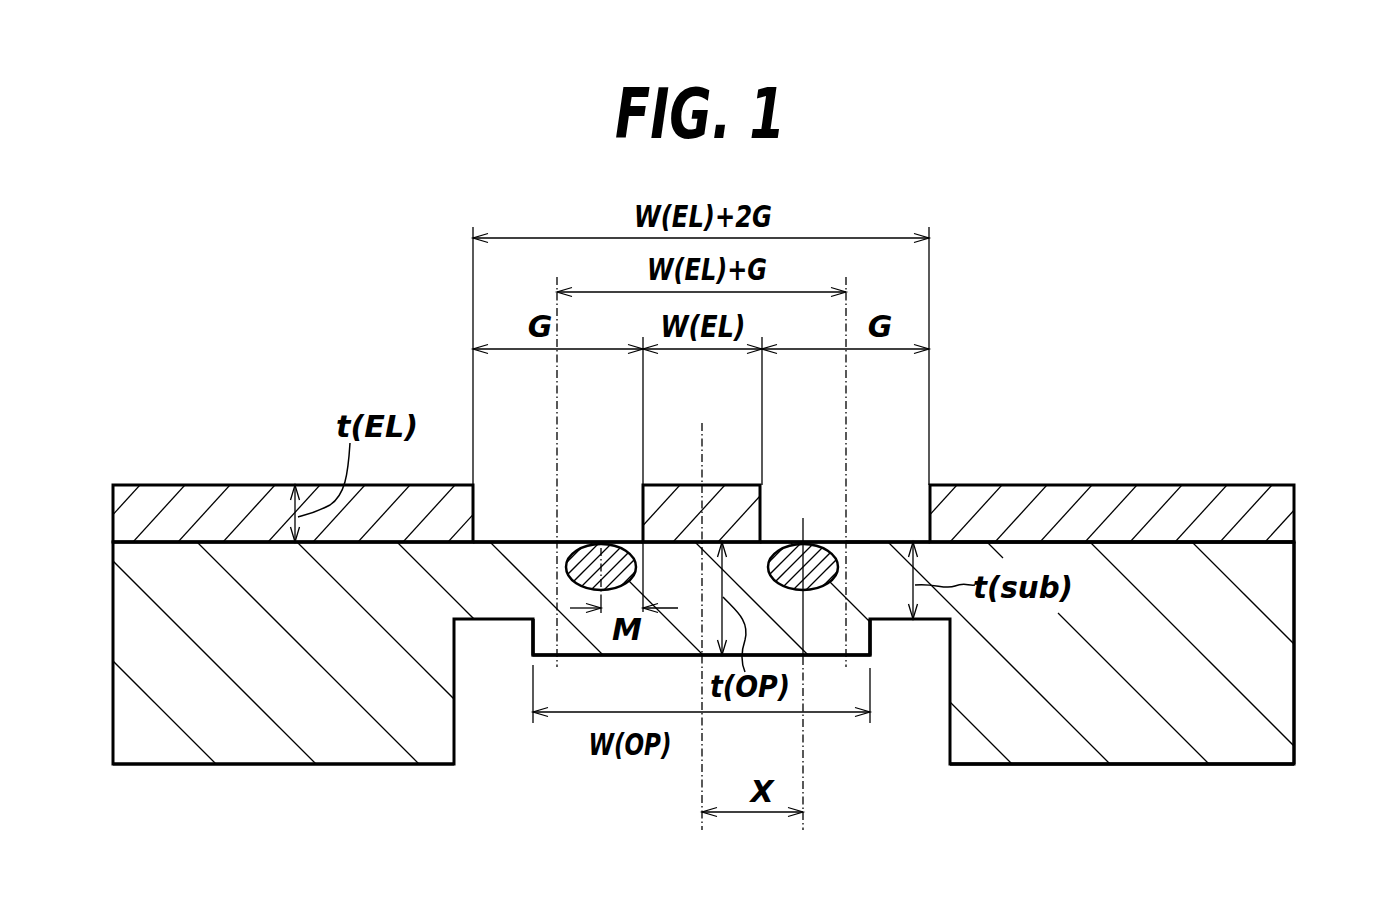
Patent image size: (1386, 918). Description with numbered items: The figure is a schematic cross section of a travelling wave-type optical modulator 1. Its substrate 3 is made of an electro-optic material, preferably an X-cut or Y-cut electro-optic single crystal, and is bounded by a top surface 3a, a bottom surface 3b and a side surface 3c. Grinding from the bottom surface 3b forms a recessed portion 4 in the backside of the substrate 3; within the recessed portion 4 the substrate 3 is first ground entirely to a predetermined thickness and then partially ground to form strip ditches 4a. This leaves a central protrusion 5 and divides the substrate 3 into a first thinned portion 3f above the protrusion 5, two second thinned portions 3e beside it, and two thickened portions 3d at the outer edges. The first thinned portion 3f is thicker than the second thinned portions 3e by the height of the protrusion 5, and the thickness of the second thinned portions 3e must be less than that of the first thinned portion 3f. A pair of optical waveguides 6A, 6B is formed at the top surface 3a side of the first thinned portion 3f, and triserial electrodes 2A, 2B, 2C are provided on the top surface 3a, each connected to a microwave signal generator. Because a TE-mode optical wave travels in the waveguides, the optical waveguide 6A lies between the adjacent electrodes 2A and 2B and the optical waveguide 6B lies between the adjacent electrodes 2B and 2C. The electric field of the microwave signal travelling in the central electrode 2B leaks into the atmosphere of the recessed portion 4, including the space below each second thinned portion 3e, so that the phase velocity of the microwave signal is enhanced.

The travelling wave-type optical modulator 1 is at (693, 603).
The electrode 2A is at (200, 508).
The central electrode 2B is at (680, 485).
The electrode 2C is at (1116, 500).
The substrate 3 is at (1247, 658).
The top surface 3a is at (1025, 542).
The bottom surface 3b is at (1125, 763).
The side surface of substrate 3c is at (1296, 580).
The thickened portion 3d is at (333, 727).
The second thinned portion 3e is at (503, 577).
The first thinned portion 3f is at (860, 577).
The recessed portion 4 is at (893, 703).
The strip ditch 4a is at (948, 668).
The protrusion 5 is at (818, 637).
The optical waveguide 6A is at (590, 545).
The optical waveguide 6B is at (797, 545).